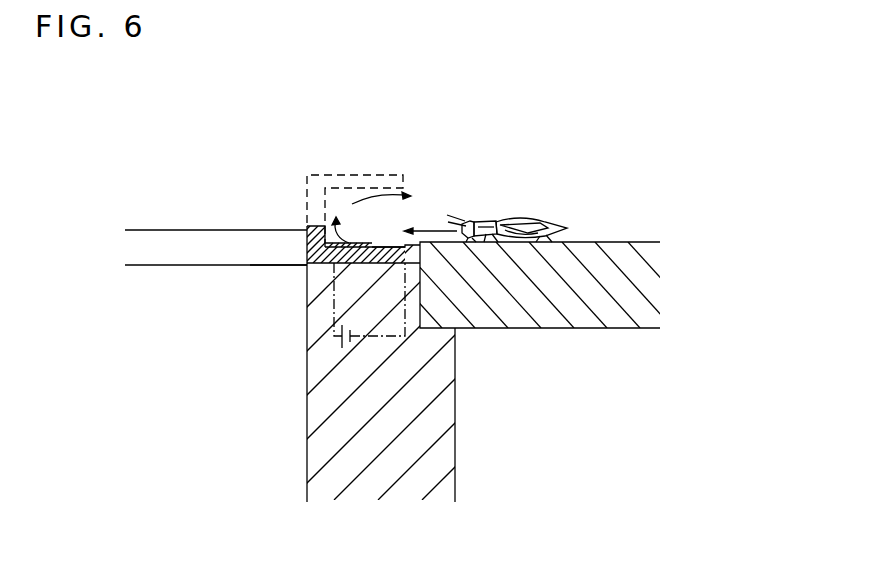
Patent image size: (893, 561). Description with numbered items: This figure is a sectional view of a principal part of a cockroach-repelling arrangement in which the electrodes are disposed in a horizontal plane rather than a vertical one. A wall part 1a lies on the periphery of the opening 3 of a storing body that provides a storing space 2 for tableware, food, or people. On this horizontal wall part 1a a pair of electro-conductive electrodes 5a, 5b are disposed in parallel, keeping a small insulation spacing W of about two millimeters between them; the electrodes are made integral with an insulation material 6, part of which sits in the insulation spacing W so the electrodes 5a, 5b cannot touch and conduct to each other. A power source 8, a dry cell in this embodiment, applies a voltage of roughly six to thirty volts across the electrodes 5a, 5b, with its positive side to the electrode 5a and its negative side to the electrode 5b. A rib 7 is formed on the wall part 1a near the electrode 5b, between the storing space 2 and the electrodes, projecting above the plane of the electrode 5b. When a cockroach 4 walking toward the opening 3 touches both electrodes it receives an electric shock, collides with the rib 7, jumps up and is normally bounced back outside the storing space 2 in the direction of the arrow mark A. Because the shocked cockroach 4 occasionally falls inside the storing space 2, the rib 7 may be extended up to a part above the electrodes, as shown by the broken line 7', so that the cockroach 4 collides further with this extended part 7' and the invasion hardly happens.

The storing space 2 is at (216, 399).
The opening 3 is at (147, 275).
The wall part 1a is at (307, 268).
The cockroach 4 is at (517, 222).
The electrode 5a is at (353, 243).
The electrode 5b is at (398, 242).
The insulation material 6 is at (307, 322).
The rib 7 is at (355, 207).
The extended part of rib 7' is at (365, 187).
The power source 8 is at (307, 374).
The insulation spacing W is at (372, 243).
The arrow mark A is at (394, 217).